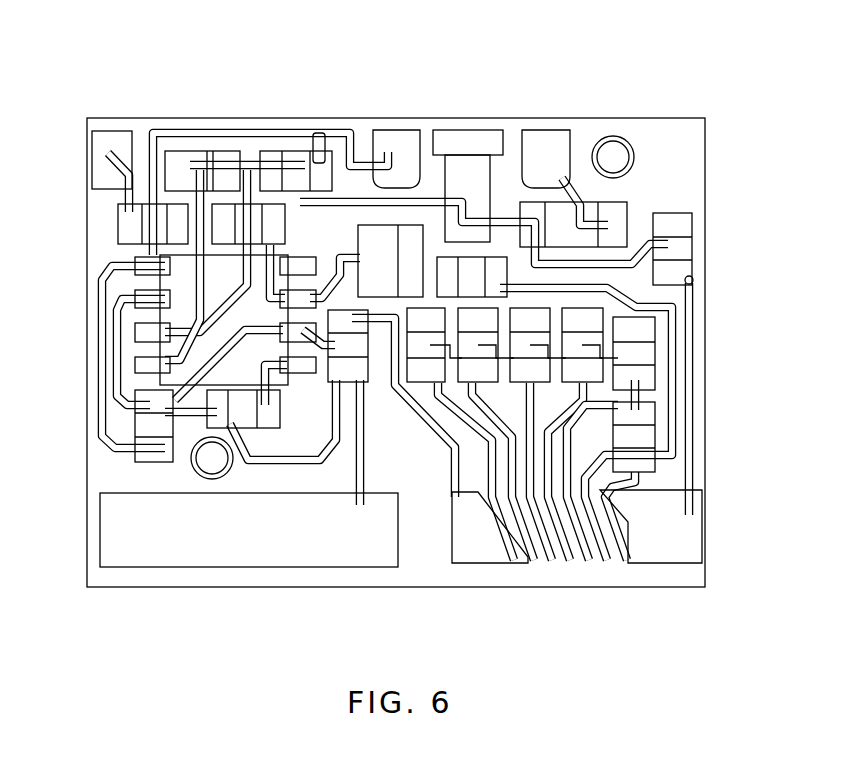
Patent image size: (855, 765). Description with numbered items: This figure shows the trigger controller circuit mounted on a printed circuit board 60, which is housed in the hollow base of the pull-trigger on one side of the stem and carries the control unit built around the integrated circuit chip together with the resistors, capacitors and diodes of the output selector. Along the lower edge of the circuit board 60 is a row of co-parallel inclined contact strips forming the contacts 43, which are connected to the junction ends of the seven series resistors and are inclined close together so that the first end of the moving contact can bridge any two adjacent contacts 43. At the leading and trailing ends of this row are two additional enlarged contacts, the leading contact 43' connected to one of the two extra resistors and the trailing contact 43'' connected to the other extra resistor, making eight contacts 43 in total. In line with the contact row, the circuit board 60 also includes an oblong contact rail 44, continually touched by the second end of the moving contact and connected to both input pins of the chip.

The printed circuit board 60 is at (100, 88).
The contact rail 44 is at (128, 550).
The contacts 43 is at (536, 515).
The leading contact 43' is at (657, 561).
The trailing contact 43'' is at (472, 562).